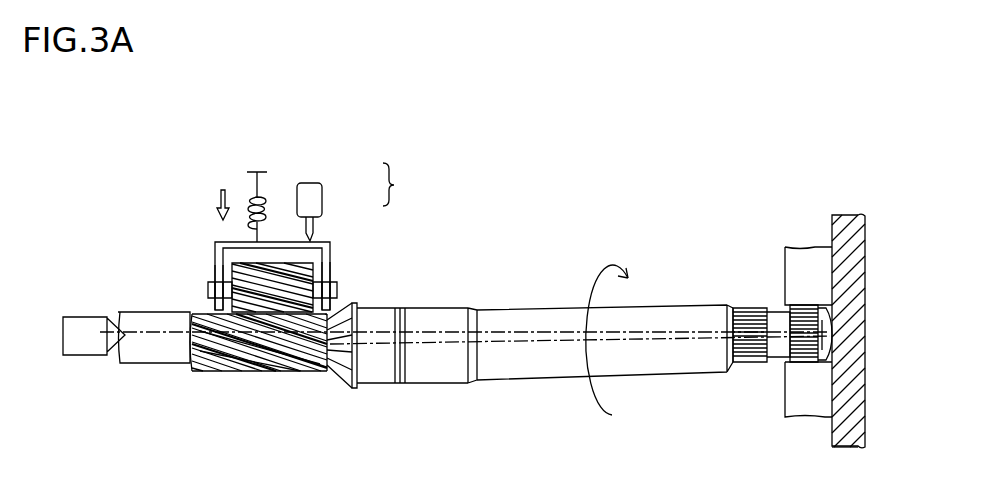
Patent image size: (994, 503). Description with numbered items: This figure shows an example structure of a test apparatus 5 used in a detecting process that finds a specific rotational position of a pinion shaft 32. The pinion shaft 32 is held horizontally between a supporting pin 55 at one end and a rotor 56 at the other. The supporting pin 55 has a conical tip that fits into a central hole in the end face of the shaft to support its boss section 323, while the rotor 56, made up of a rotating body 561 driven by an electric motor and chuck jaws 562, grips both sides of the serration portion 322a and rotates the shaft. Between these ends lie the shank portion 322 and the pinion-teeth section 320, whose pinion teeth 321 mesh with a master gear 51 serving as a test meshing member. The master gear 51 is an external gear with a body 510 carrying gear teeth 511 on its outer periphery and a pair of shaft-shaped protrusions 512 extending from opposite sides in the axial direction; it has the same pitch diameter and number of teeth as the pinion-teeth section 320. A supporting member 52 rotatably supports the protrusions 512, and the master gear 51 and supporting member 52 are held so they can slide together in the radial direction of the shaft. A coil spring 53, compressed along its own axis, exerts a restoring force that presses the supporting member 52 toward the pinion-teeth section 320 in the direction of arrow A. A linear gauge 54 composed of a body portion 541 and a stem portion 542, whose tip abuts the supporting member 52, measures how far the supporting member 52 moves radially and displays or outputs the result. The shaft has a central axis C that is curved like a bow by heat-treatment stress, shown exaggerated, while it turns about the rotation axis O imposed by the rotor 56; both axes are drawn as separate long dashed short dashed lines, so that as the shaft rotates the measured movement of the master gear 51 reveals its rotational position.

The test apparatus 5 is at (132, 190).
The pinion shaft 32 is at (664, 305).
The pinion-teeth section 320 is at (242, 374).
The pinion teeth 321 is at (292, 360).
The shank portion 322 is at (493, 308).
The serration portion 322a is at (788, 304).
The boss section 323 is at (171, 355).
The master gear 51 is at (325, 255).
The body 510 is at (218, 266).
The gear teeth 511 is at (266, 265).
The shaft-shaped protrusions 512 is at (208, 288).
The supporting member 52 is at (318, 262).
The coil spring 53 is at (262, 198).
The linear gauge 54 is at (398, 184).
The body portion 541 is at (323, 190).
The stem portion 542 is at (316, 224).
The supporting pin 55 is at (88, 316).
The rotor 56 is at (804, 222).
The rotating body 561 is at (830, 422).
The chuck jaws 562 is at (793, 259).
The rotation axis O is at (436, 331).
The central axis C is at (440, 345).
The arrow A is at (218, 190).